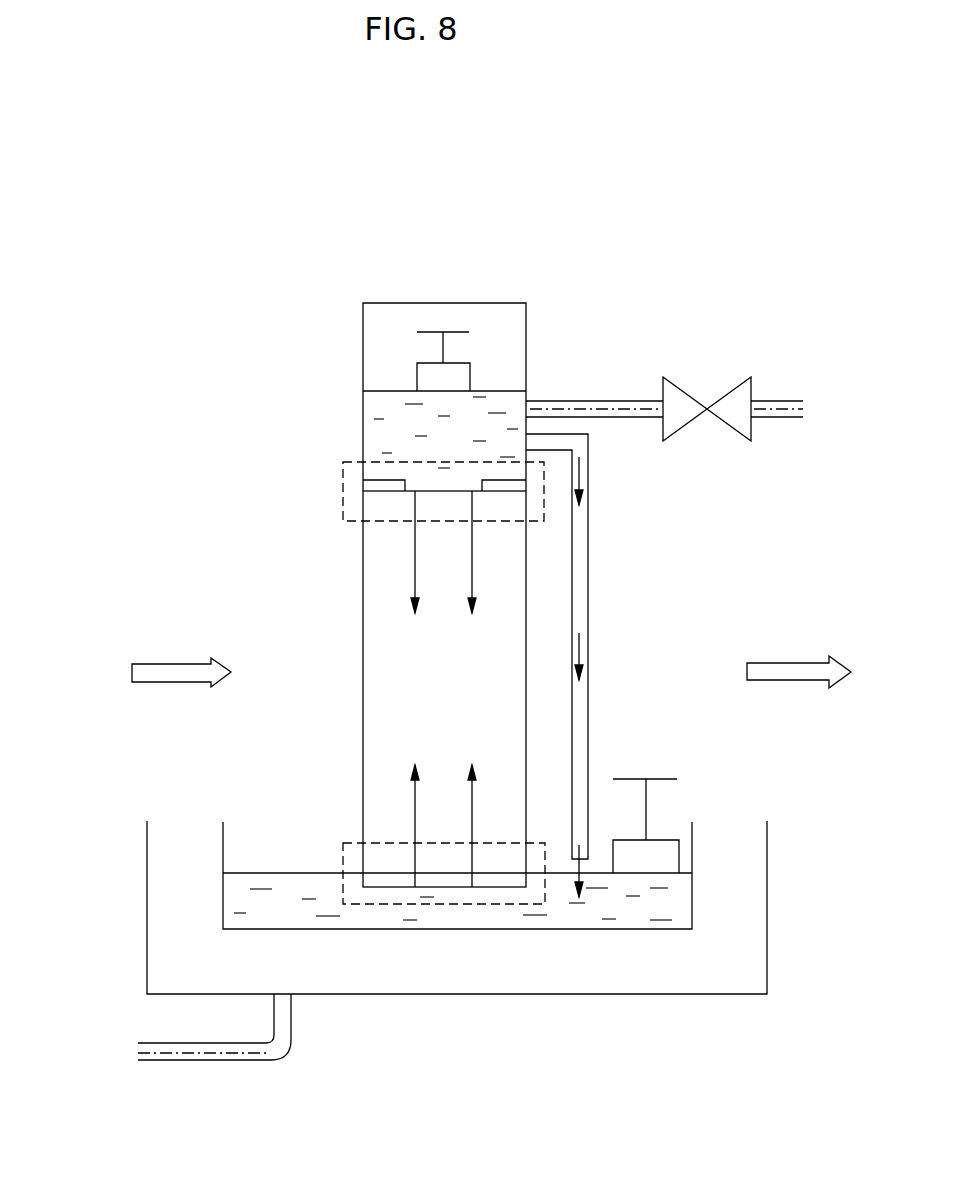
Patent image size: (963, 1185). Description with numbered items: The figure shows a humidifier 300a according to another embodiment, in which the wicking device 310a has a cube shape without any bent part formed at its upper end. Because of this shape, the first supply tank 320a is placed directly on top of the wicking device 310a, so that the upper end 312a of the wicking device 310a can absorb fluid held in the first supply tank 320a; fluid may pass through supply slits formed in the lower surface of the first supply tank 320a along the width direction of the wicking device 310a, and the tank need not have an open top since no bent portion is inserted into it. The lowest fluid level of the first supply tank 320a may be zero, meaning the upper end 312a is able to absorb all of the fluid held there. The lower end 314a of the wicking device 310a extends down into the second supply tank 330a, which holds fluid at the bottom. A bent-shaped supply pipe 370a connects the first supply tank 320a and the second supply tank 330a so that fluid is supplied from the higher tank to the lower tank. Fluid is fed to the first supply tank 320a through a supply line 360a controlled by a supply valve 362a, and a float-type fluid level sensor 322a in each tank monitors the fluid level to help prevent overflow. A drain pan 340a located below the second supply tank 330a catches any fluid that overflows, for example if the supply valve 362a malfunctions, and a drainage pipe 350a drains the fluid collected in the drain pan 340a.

The humidifier 300a is at (72, 258).
The wicking device 310a is at (363, 618).
The upper end of the wicking device 312a is at (343, 490).
The lower end portion of humidifying element 314a is at (442, 904).
The first supply tank 320a is at (363, 419).
The float valve 322a is at (427, 332).
The second supply tank 330a is at (692, 905).
The drain pan / housing 340a is at (147, 906).
The drain pipe 350a is at (207, 1055).
The water supply pipe 360a is at (786, 407).
The supply valve 362a is at (684, 395).
The supply pipe 370a is at (580, 648).